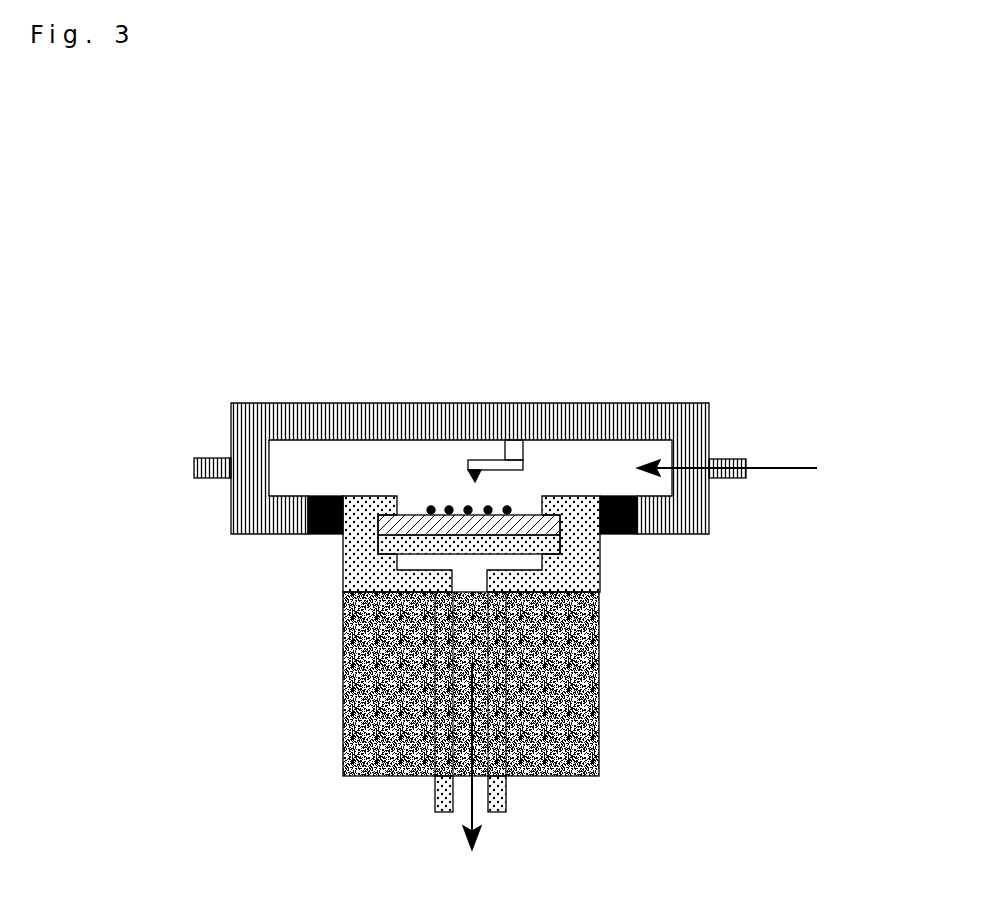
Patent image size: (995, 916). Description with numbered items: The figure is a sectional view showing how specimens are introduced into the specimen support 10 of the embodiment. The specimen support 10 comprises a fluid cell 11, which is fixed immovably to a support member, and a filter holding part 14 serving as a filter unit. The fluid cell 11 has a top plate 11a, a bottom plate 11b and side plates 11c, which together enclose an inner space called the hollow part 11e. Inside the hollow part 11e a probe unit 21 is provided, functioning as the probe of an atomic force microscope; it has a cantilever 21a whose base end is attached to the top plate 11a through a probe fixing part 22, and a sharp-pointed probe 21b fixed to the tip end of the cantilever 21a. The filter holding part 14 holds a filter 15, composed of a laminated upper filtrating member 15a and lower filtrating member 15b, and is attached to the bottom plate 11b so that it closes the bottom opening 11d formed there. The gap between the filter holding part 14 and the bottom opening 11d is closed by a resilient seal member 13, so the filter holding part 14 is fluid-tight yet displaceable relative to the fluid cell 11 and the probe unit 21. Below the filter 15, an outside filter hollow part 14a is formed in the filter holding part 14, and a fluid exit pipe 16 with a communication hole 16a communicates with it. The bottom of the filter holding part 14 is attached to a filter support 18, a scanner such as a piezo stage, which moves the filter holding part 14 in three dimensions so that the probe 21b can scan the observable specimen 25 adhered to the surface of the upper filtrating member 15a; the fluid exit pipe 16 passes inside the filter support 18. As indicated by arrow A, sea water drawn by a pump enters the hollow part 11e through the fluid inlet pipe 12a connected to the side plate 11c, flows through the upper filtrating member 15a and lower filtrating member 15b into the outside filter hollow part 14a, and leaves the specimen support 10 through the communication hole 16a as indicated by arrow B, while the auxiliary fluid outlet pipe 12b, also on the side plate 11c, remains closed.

The specimen support 10 is at (248, 362).
The fluid cell 11 is at (230, 412).
The top plate 11a is at (663, 410).
The bottom plate 11b is at (680, 535).
The side plate 11c is at (702, 503).
The bottom opening 11d is at (617, 535).
The hollow part 11e is at (280, 453).
The fluid inlet pipe 12a is at (723, 453).
The auxiliary fluid outlet pipe 12b is at (208, 478).
The seal member 13 is at (312, 538).
The filter holding part 14 is at (342, 571).
The outside filter hollow part 14a is at (343, 612).
The filter 15 is at (551, 566).
The upper filtrating member 15a is at (560, 533).
The lower filtrating member 15b is at (560, 556).
The fluid exit pipe 16 is at (433, 806).
The communication hole 16a is at (483, 807).
The filter support 18 is at (599, 752).
The probe unit 21 is at (485, 411).
The cantilever 21a is at (498, 464).
The probe 21b is at (471, 473).
The probe fixing part 22 is at (523, 448).
The observable specimen 25 is at (430, 506).
The arrow A is at (790, 467).
The arrow B is at (463, 812).